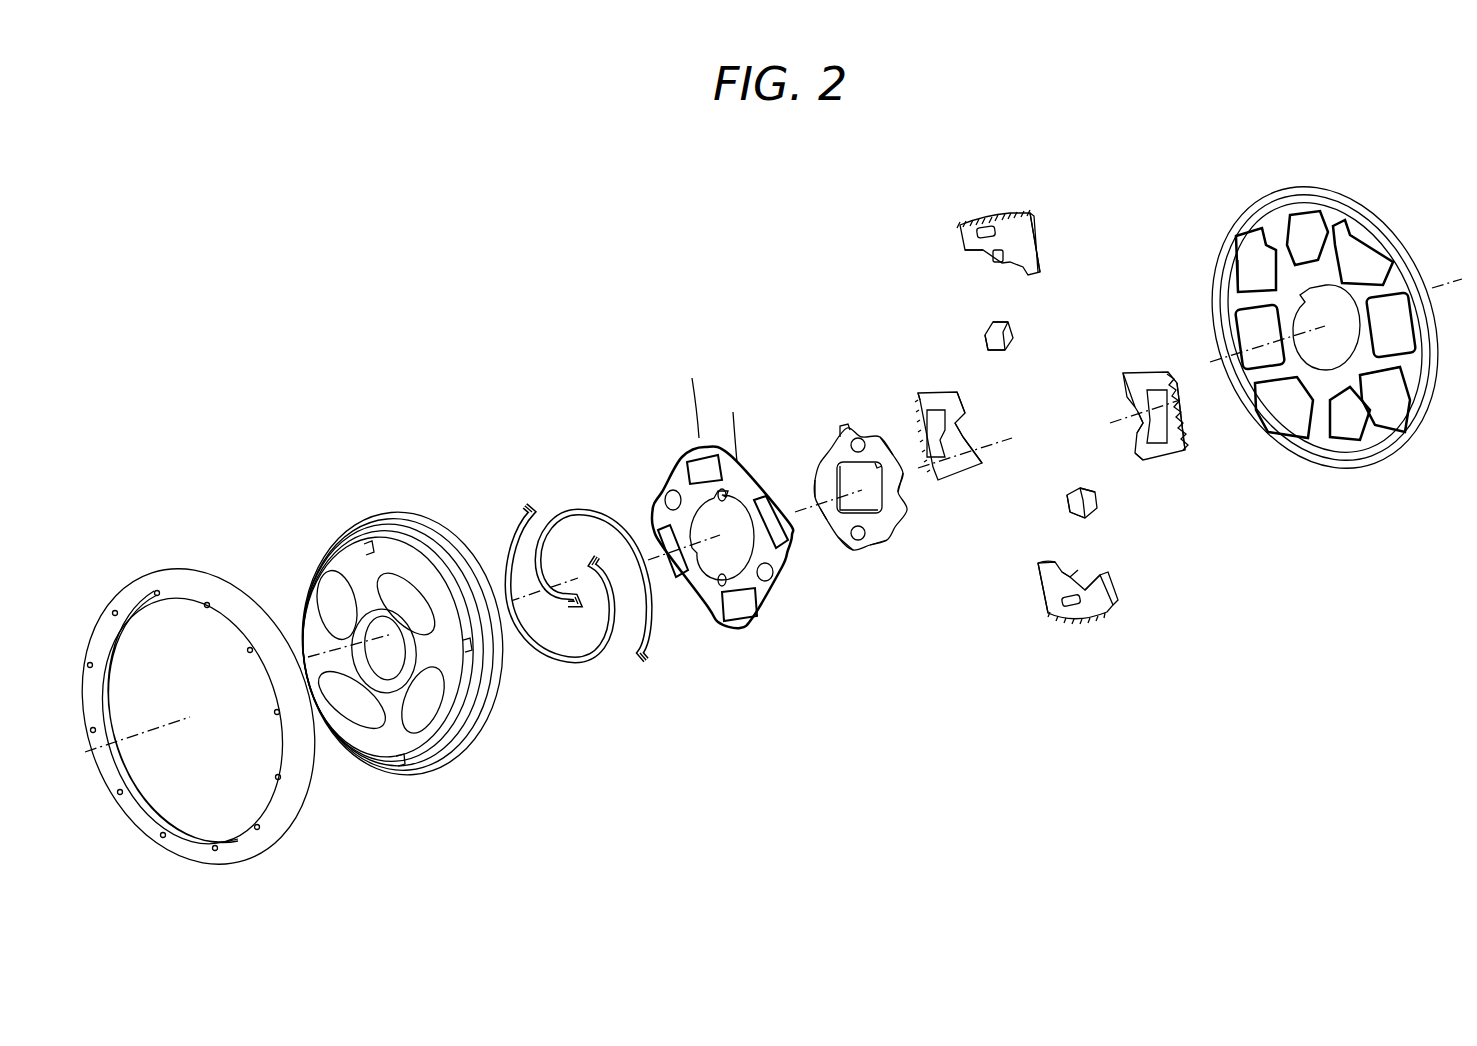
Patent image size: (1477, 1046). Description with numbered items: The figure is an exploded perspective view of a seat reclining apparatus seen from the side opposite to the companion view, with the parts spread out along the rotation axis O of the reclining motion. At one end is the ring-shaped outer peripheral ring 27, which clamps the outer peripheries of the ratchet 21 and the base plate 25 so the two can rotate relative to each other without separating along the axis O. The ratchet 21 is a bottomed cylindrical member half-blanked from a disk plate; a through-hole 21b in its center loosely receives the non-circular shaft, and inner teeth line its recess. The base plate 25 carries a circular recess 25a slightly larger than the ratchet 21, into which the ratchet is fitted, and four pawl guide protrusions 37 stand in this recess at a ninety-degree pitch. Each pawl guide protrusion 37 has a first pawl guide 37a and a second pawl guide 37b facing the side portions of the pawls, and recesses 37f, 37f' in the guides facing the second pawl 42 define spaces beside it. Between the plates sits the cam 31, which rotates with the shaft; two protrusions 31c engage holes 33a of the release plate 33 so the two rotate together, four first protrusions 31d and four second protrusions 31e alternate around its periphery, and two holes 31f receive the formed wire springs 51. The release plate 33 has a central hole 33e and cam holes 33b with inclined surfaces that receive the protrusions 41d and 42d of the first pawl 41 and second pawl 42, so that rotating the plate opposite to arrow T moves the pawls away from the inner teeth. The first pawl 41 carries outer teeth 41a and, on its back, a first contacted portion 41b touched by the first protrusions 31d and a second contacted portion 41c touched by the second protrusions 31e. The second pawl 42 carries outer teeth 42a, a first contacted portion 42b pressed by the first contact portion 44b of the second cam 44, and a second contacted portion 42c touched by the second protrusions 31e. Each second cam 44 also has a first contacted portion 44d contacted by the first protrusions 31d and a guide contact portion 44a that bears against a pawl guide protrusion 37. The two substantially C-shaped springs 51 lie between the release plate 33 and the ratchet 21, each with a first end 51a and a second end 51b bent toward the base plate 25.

The ratchet 21 is at (354, 490).
The through-hole 21b is at (388, 655).
The base plate 25 is at (1355, 180).
The circular recess 25a is at (1225, 315).
The outer peripheral ring 27 is at (174, 556).
The cam 31 is at (834, 410).
The protrusions 31c is at (833, 435).
The first protrusions 31d is at (828, 450).
The second protrusions 31e is at (858, 438).
The holes 31f is at (866, 442).
The release plate 33 is at (694, 436).
The holes 33a is at (678, 503).
The cam holes 33b is at (688, 470).
The hole 33e is at (718, 585).
The pawl guide protrusions 37 is at (1240, 252).
The first pawl guide 37a is at (1250, 235).
The second pawl guide 37b is at (1305, 212).
The recess 37f is at (1294, 331).
The window notch 37f' is at (1373, 375).
The first pawl 41 is at (950, 392).
The outer teeth 41a is at (925, 395).
The first contacted portion 41b is at (966, 460).
The second contacted portion 41c is at (960, 408).
The protrusion 41d is at (964, 432).
The second pawl 42 is at (1040, 240).
The outer teeth 42a is at (980, 222).
The first contacted portion 42b is at (965, 252).
The second contacted portion 42c is at (1040, 268).
The protrusion 42d is at (1010, 215).
The second cam 44 is at (1013, 336).
The guide contact portion 44a is at (985, 338).
The first contact portion 44b is at (995, 326).
The first contacted portion 44d is at (1008, 348).
The formed wire springs 51 is at (512, 540).
The first end 51a is at (585, 562).
The second end 51b is at (534, 507).
The arrow T is at (733, 425).
The axis o is at (1216, 413).